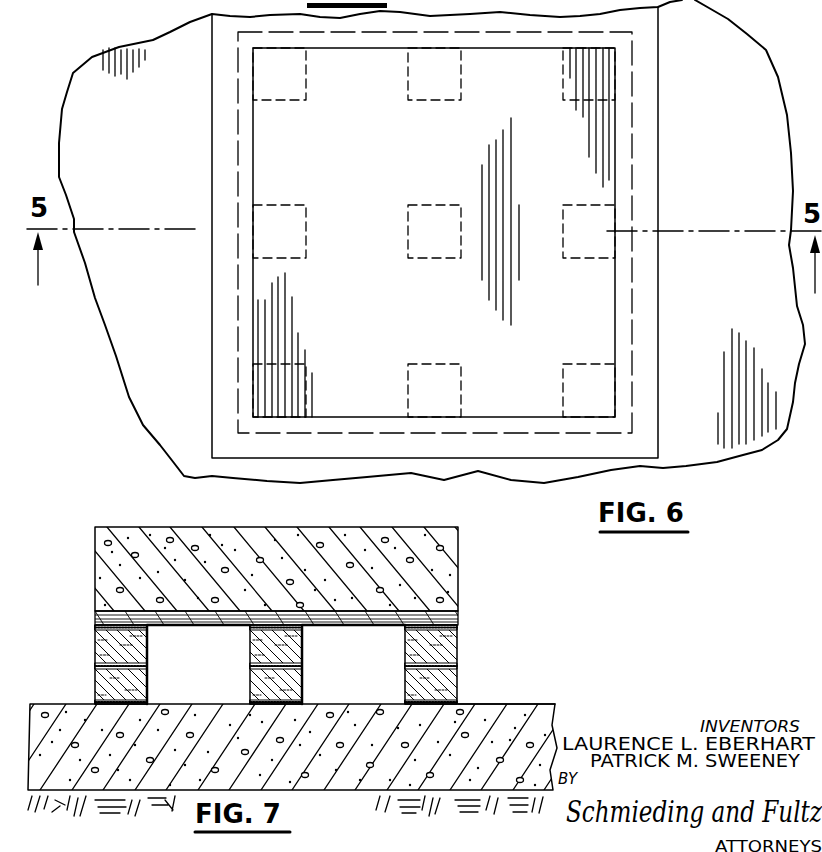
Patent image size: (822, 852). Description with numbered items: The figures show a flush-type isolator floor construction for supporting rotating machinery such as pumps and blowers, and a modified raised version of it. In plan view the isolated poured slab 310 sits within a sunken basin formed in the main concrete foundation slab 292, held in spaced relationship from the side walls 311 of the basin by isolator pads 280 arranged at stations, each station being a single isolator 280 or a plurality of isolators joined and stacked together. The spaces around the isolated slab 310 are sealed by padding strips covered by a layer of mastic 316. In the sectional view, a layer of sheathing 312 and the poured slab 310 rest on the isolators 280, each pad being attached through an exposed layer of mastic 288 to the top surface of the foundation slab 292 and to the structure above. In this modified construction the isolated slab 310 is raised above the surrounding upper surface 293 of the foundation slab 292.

In FIG. 6, the isolator pad 280 is at (437, 107).
In FIG. 7, the isolator pad 280 is at (86, 677).
In FIG. 7, the layer of mastic 288 is at (266, 625).
In FIG. 6, the concrete foundation slab 292 is at (192, 153).
In FIG. 7, the concrete foundation slab 292 is at (465, 790).
In FIG. 7, the upper surface of foundation slab 293 is at (550, 704).
In FIG. 6, the poured slab 310 is at (590, 356).
In FIG. 7, the poured slab 310 is at (185, 530).
In FIG. 6, the side walls of basin 311 is at (244, 200).
In FIG. 7, the layer of sheathing 312 is at (412, 611).
In FIG. 6, the layer of mastic 316 is at (653, 80).